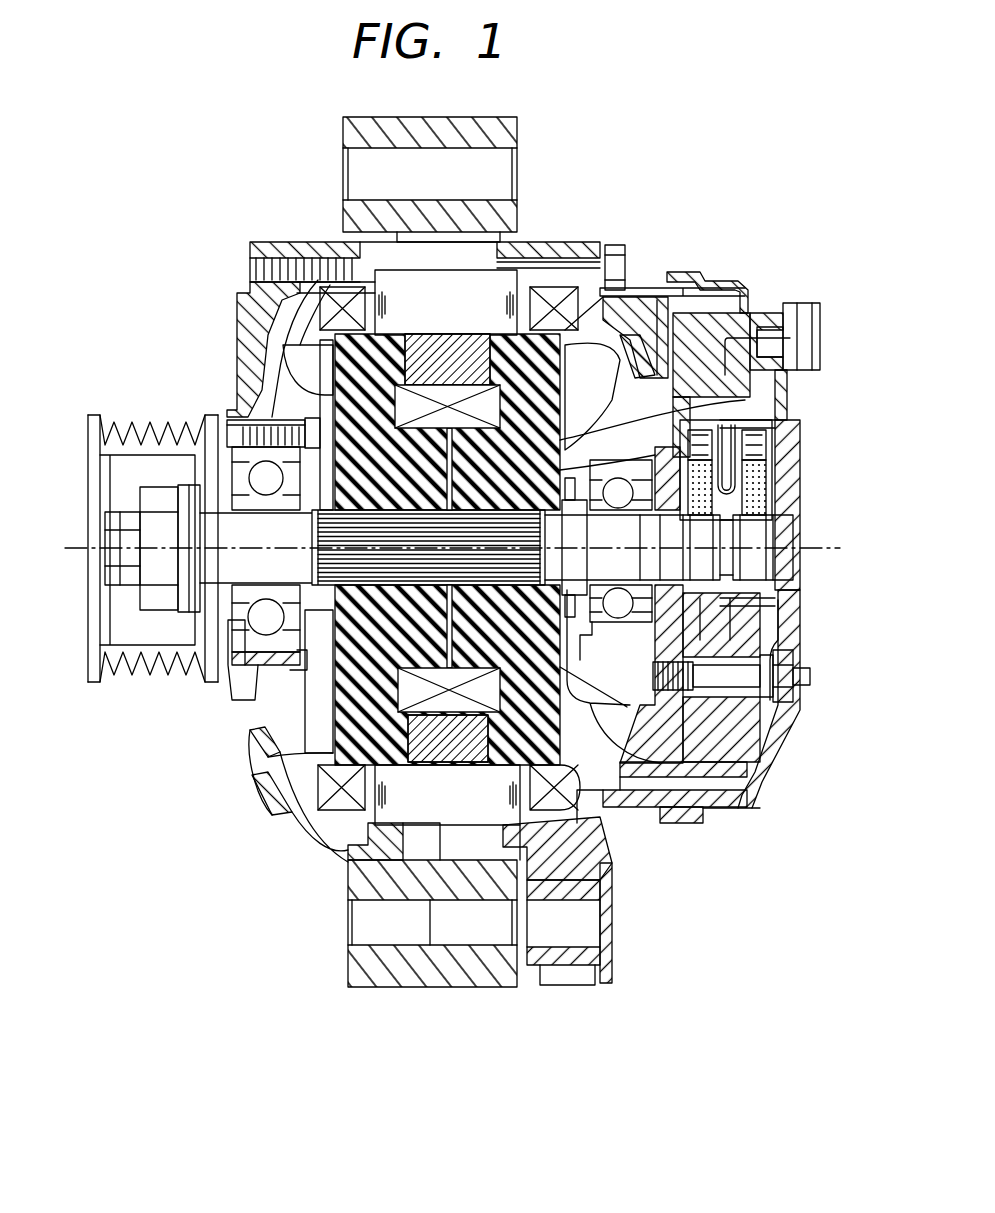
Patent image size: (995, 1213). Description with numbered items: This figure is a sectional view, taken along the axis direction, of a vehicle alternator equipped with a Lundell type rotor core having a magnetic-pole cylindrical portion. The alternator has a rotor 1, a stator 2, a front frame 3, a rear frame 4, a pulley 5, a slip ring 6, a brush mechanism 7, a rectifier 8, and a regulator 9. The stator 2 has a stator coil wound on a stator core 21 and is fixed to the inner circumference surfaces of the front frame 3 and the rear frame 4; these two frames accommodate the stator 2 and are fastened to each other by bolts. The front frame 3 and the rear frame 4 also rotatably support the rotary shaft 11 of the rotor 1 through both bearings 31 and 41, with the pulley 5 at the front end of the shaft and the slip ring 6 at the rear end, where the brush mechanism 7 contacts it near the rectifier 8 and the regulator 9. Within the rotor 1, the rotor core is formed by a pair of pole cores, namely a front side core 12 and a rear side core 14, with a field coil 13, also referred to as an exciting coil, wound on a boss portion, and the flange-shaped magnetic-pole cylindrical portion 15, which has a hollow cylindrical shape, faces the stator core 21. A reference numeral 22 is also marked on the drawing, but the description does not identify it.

The rotor 1 is at (210, 581).
The stator 2 is at (512, 262).
The front frame 3 is at (372, 878).
The rear frame 4 is at (573, 848).
The pulley 5 is at (95, 678).
The slip ring 6 is at (760, 560).
The brush mechanism 7 is at (760, 473).
The rectifier 8 is at (793, 750).
The regulator 9 is at (762, 312).
The rotary shaft 11 is at (735, 533).
The front side core 12 is at (367, 677).
The field coil 13 is at (408, 693).
The rear side core 14 is at (632, 412).
The magnetic-pole cylindrical portion 15 is at (457, 765).
The stator core 21 is at (614, 262).
The front bracket 22 is at (320, 310).
The bearing 31 is at (265, 623).
The bearing 41 is at (618, 605).